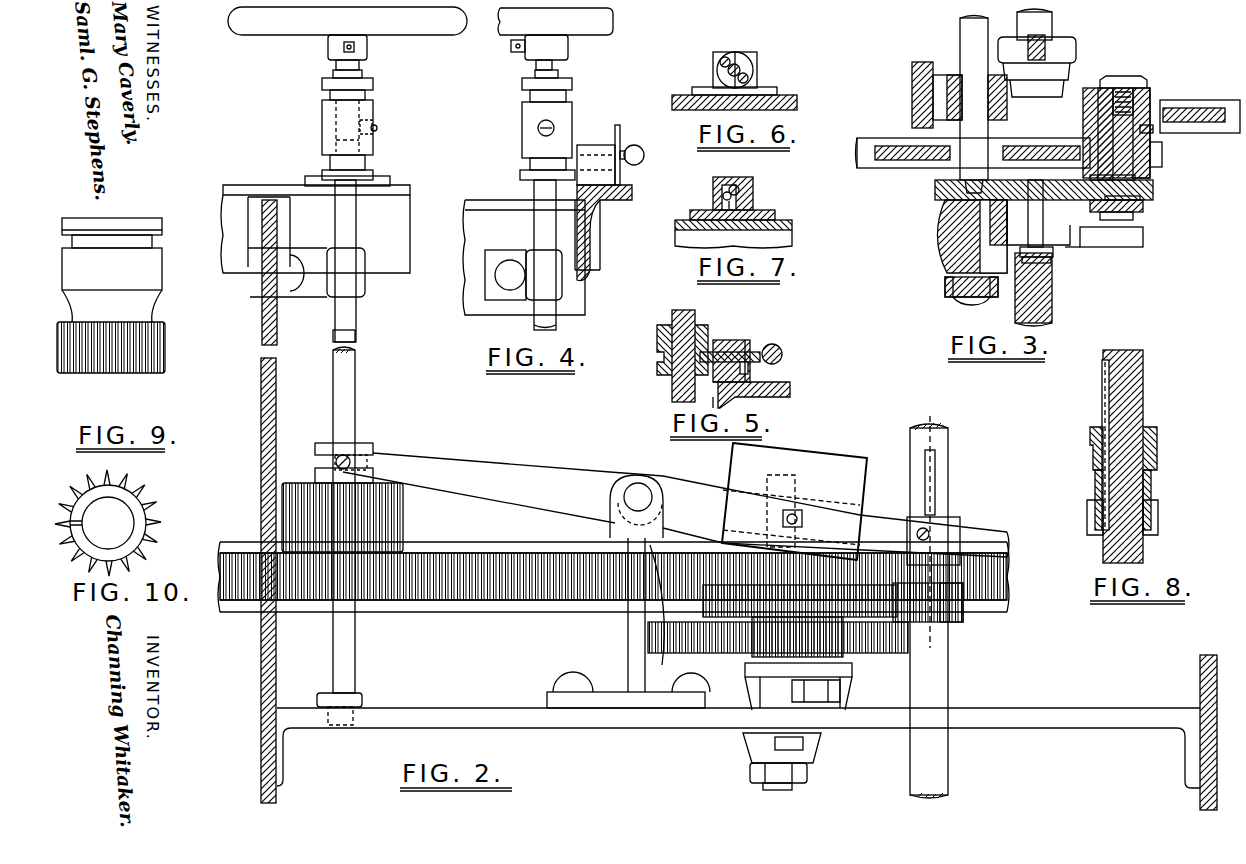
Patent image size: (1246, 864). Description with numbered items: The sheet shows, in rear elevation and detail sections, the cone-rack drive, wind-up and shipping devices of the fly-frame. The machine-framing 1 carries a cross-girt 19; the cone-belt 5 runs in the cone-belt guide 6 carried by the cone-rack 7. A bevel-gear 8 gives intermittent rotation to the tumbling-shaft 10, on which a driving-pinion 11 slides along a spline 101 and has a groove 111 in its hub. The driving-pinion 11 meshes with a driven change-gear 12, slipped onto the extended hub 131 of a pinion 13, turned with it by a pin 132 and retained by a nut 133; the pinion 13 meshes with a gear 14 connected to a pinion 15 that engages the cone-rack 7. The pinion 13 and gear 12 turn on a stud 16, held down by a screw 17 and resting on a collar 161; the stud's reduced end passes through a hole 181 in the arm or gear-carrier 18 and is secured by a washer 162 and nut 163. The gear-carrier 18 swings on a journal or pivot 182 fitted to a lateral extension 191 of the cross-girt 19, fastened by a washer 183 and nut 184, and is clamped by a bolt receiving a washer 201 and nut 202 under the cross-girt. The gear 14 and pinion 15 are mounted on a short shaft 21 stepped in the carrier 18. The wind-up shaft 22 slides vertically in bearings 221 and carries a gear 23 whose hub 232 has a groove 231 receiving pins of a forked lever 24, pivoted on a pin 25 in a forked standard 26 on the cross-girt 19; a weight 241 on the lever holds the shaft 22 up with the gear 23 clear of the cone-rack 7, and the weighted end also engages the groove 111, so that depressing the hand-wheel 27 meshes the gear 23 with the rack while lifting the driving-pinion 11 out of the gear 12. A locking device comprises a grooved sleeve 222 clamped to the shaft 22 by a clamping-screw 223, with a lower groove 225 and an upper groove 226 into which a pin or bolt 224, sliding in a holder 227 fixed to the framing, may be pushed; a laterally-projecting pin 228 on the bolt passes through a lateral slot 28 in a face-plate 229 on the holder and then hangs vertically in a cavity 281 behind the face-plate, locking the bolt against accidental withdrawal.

In FIG. 2, the machine-framing 1 is at (250, 709).
In FIG. 5, the machine-framing 1 is at (758, 406).
In FIG. 2, the cone-belt 5 is at (347, 135).
In FIG. 4, the cone-belt guide 6 is at (624, 212).
In FIG. 2, the cone-rack 7 is at (496, 617).
In FIG. 4, the cone-rack 7 is at (607, 230).
In FIG. 3, the cone-rack 7 is at (910, 96).
In FIG. 2, the bevel-gear 8 is at (929, 530).
In FIG. 2, the tumbling-shaft 10 is at (957, 447).
In FIG. 3, the tumbling-shaft 10 is at (1033, 167).
In FIG. 8, the tumbling-shaft 10 is at (1152, 387).
In FIG. 2, the driving-pinion 11 is at (964, 629).
In FIG. 8, the driving-pinion 11 is at (1154, 500).
In FIG. 9, the driving-pinion 11 is at (172, 333).
In FIG. 10, the driving-pinion 11 is at (150, 500).
In FIG. 2, the driven gear 12 is at (934, 590).
In FIG. 3, the driven gear 12 is at (1214, 97).
In FIG. 2, the pinion 13 is at (852, 661).
In FIG. 3, the pinion 13 is at (1163, 160).
In FIG. 2, the gear 14 is at (703, 652).
In FIG. 3, the gear 14 is at (898, 172).
In FIG. 2, the pinion 15 is at (762, 571).
In FIG. 3, the pinion 15 is at (953, 75).
In FIG. 3, the stud 16 is at (1140, 225).
In FIG. 3, the screw 17 is at (1124, 74).
In FIG. 2, the arm or gear-carrier 18 is at (859, 677).
In FIG. 3, the arm or gear-carrier 18 is at (1157, 190).
In FIG. 2, the cross-girt 19 is at (379, 737).
In FIG. 3, the cross-girt 19 is at (1104, 246).
In FIG. 2, the short shaft 21 is at (768, 480).
In FIG. 3, the short shaft 21 is at (974, 105).
In FIG. 2, the wind-up shaft 22 is at (363, 404).
In FIG. 4, the wind-up shaft 22 is at (528, 223).
In FIG. 5, the wind-up shaft 22 is at (687, 305).
In FIG. 2, the gear 23 is at (412, 518).
In FIG. 2, the lever 24 is at (676, 505).
In FIG. 3, the lever 24 is at (1057, 48).
In FIG. 2, the pin 25 is at (648, 484).
In FIG. 2, the forked standard 26 is at (618, 541).
In FIG. 2, the hand-wheel 27 is at (434, 24).
In FIG. 4, the hand-wheel 27 is at (614, 23).
In FIG. 6, the lateral slot 28 is at (720, 60).
In FIG. 2, the spline 101 is at (937, 494).
In FIG. 8, the spline 101 is at (1102, 397).
In FIG. 8, the groove 111 is at (1152, 445).
In FIG. 9, the groove 111 is at (71, 245).
In FIG. 3, the extended hub 131 is at (1143, 86).
In FIG. 3, the pin 132 is at (1152, 132).
In FIG. 3, the nut 133 is at (1150, 88).
In FIG. 3, the collar 161 is at (1140, 172).
In FIG. 2, the washer 162 is at (847, 695).
In FIG. 3, the washer 162 is at (1150, 205).
In FIG. 2, the nut 163 is at (822, 698).
In FIG. 3, the nut 163 is at (1137, 214).
In FIG. 3, the hole 181 is at (1170, 185).
In FIG. 2, the journal or pivot 182 is at (794, 788).
In FIG. 3, the journal or pivot 182 is at (972, 304).
In FIG. 2, the washer 183 is at (819, 762).
In FIG. 3, the washer 183 is at (943, 280).
In FIG. 2, the nut 184 is at (748, 777).
In FIG. 3, the nut 184 is at (945, 292).
In FIG. 3, the lateral extension 191 is at (940, 246).
In FIG. 3, the washer 201 is at (1052, 258).
In FIG. 3, the nut 202 is at (1050, 263).
In FIG. 2, the bearings 221 is at (369, 296).
In FIG. 4, the bearings 221 is at (523, 275).
In FIG. 2, the grooved sleeve 222 is at (314, 124).
In FIG. 4, the grooved sleeve 222 is at (514, 144).
In FIG. 2, the clamping-screw 223 is at (378, 128).
In FIG. 4, the clamping-screw 223 is at (531, 129).
In FIG. 4, the pin or bolt 224 is at (570, 162).
In FIG. 6, the pin or bolt 224 is at (747, 69).
In FIG. 7, the pin or bolt 224 is at (754, 190).
In FIG. 5, the pin or bolt 224 is at (778, 346).
In FIG. 2, the lower groove 225 is at (318, 167).
In FIG. 4, the lower groove 225 is at (512, 168).
In FIG. 2, the upper groove 226 is at (314, 95).
In FIG. 4, the upper groove 226 is at (517, 95).
In FIG. 4, the holder 227 is at (587, 142).
In FIG. 6, the holder 227 is at (757, 47).
In FIG. 7, the holder 227 is at (748, 171).
In FIG. 5, the holder 227 is at (756, 375).
In FIG. 7, the laterally-projecting pin 228 is at (714, 206).
In FIG. 5, the laterally-projecting pin 228 is at (760, 370).
In FIG. 4, the face-plate 229 is at (620, 145).
In FIG. 6, the face-plate 229 is at (743, 45).
In FIG. 5, the face-plate 229 is at (747, 342).
In FIG. 2, the groove 231 is at (324, 465).
In FIG. 2, the hub 232 is at (383, 451).
In FIG. 2, the weight 241 is at (794, 501).
In FIG. 7, the cavity 281 is at (720, 192).